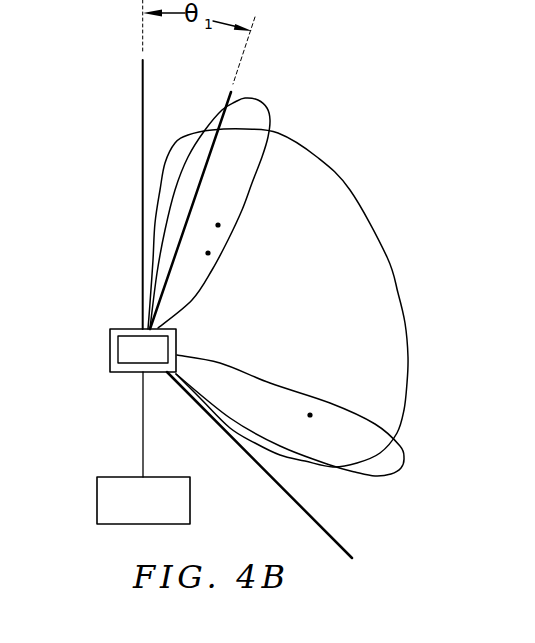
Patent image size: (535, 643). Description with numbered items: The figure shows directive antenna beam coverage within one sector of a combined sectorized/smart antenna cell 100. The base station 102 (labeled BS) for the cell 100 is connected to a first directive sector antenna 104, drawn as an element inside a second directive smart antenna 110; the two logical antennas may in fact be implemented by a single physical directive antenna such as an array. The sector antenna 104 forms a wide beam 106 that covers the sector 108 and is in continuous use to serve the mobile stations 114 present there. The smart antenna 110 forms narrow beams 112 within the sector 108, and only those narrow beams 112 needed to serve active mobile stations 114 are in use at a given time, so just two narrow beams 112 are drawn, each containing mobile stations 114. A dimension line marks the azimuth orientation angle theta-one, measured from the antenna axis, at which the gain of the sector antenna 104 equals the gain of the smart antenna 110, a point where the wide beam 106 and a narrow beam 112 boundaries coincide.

The combined sectorized/smart antenna cell 100 is at (84, 243).
The base station 102 is at (102, 526).
The first directive (sector) antenna 104 is at (118, 344).
The wide beam 106 is at (388, 268).
The sector 108 is at (345, 548).
The second directive (smart) antenna 110 is at (115, 372).
The narrow beam 112 is at (423, 444).
The mobile station 114 is at (218, 225).